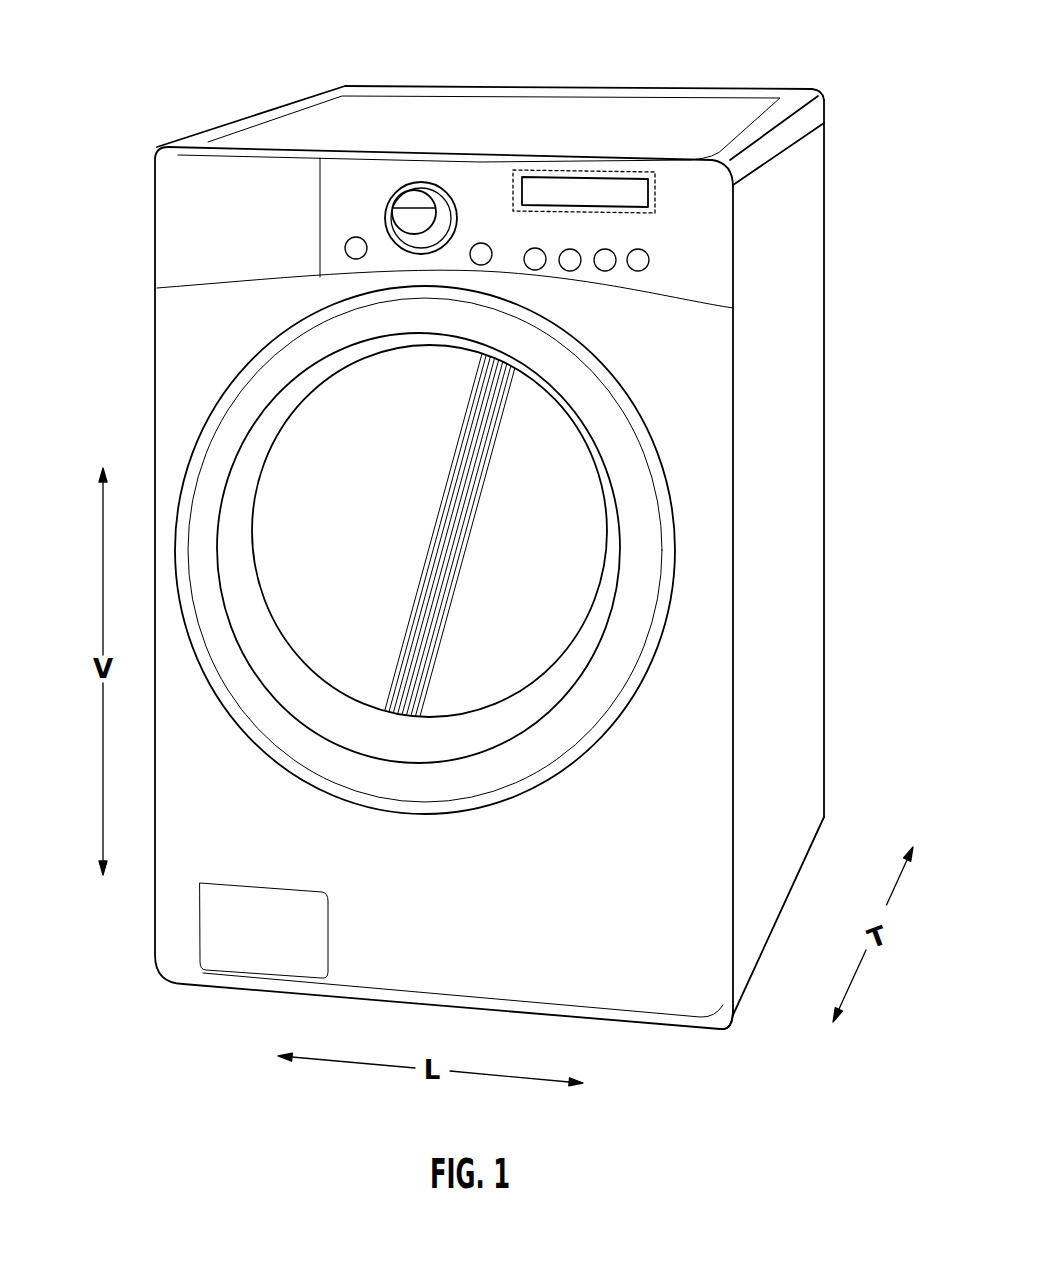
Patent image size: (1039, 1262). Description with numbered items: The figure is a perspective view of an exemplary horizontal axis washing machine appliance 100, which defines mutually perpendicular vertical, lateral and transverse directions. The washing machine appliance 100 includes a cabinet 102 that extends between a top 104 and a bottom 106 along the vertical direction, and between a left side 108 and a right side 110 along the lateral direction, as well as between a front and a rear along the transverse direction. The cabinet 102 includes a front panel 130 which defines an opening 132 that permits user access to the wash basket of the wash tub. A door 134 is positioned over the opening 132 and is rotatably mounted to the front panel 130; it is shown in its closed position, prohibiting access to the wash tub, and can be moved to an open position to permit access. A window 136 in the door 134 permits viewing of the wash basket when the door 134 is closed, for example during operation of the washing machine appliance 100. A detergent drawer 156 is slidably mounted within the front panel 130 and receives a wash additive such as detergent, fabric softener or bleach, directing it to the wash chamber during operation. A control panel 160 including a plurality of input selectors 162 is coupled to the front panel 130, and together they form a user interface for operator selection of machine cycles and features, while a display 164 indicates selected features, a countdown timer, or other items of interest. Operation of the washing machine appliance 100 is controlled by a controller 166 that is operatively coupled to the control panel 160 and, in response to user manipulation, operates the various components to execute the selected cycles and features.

The washing machine appliance 100 is at (130, 60).
The cabinet 102 is at (803, 397).
The top 104 is at (838, 95).
The bottom 106 is at (820, 868).
The left side 108 is at (160, 985).
The right side 110 is at (730, 1030).
The front panel 130 is at (185, 350).
The opening 132 is at (633, 407).
The door 134 is at (648, 507).
The window 136 is at (375, 487).
The detergent drawer 156 is at (173, 187).
The control panel 160 is at (490, 190).
The input selectors 162 is at (416, 206).
The display 164 is at (595, 188).
The controller 166 is at (573, 170).